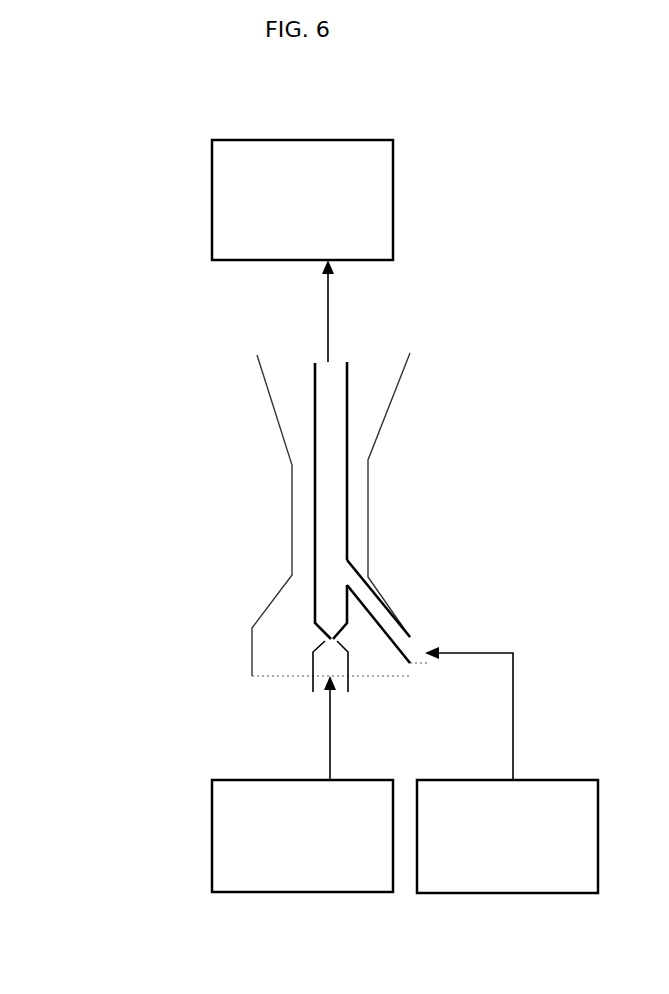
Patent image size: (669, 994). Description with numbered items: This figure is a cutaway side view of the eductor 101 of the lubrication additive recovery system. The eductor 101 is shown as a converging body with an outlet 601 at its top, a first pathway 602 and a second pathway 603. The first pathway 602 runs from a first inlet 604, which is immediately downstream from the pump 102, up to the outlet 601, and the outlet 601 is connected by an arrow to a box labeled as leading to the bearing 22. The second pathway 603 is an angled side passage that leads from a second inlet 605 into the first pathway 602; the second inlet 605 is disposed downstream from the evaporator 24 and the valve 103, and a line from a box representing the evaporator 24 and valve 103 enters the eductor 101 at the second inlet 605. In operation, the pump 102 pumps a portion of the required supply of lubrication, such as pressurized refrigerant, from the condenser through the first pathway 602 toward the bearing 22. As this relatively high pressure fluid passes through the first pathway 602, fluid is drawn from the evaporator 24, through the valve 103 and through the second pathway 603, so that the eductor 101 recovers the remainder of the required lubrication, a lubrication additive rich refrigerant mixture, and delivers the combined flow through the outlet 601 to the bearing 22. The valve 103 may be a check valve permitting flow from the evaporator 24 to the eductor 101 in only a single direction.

The bearing 22 is at (302, 251).
The eductor 101 is at (243, 416).
The outlet 601 is at (337, 382).
The first pathway 602 is at (337, 530).
The second pathway 603 is at (385, 622).
The first inlet 604 is at (342, 670).
The second inlet 605 is at (428, 640).
The pump 102 is at (302, 784).
The evaporator 24 is at (507, 836).
The valve 103 is at (506, 872).